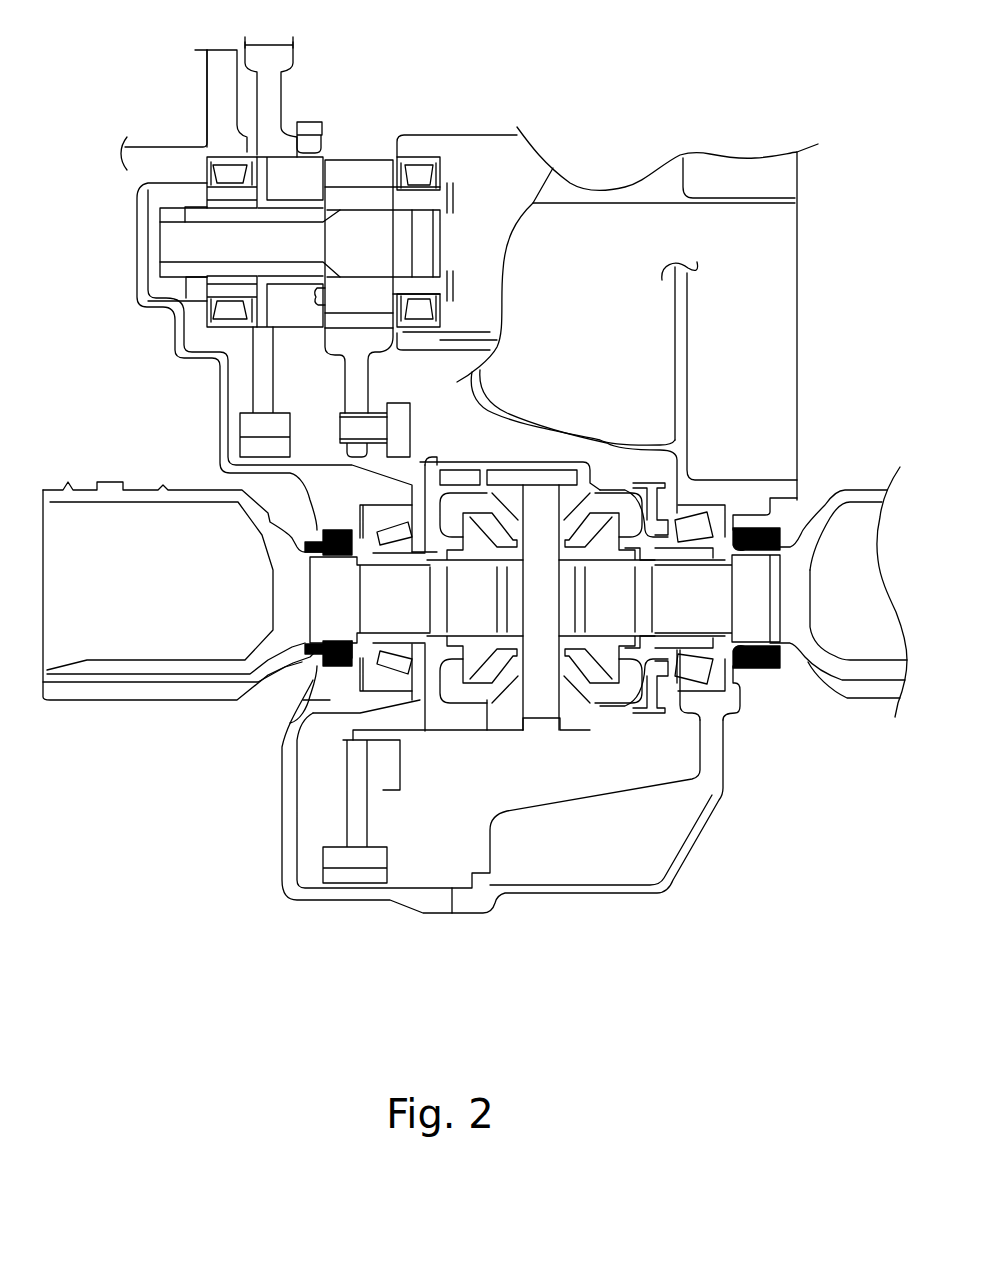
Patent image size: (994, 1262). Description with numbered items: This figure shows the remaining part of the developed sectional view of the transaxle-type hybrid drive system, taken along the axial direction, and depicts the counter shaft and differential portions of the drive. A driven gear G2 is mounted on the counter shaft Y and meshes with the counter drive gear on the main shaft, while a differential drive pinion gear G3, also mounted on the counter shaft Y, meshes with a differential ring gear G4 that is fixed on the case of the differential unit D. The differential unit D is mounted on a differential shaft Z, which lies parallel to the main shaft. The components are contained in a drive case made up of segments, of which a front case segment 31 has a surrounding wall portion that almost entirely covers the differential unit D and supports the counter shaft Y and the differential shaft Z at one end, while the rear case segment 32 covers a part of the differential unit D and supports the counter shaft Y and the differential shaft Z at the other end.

The driven gear G2 is at (272, 90).
The differential drive pinion gear G3 is at (367, 163).
The differential ring gear G4 is at (360, 378).
The counter shaft Y is at (177, 240).
The rear case segment 32 is at (217, 413).
The differential unit D is at (533, 450).
The differential shaft Z is at (757, 603).
The front case segment 31 is at (723, 800).